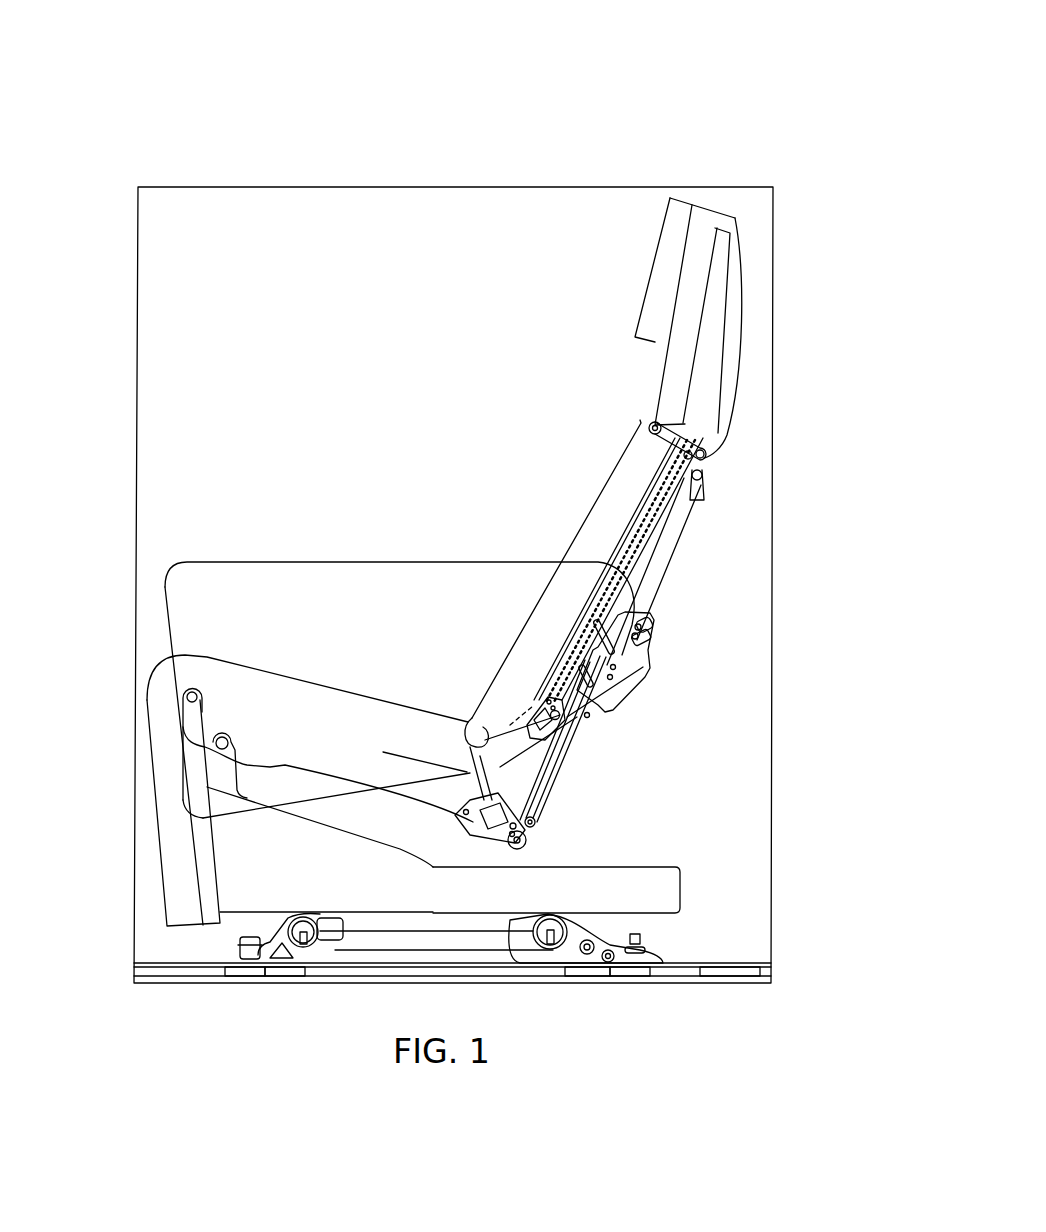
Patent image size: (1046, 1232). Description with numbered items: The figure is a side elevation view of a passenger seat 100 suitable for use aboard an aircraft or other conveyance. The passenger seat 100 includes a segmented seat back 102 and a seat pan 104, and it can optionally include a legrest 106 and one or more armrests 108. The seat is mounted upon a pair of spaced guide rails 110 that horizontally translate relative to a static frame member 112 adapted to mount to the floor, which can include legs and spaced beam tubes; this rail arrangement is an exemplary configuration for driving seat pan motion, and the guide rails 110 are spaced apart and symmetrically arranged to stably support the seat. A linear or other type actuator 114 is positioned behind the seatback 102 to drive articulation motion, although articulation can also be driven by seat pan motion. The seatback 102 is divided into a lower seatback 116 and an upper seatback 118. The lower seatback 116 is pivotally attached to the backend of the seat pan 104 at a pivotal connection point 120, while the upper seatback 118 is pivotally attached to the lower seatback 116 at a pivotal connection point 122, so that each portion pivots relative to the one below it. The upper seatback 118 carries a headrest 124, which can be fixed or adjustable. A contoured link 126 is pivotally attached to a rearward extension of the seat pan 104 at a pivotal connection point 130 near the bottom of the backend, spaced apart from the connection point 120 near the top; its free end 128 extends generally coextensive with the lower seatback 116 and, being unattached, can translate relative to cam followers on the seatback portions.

The passenger seat 100 is at (757, 90).
The segmented seat back 102 is at (708, 488).
The seat pan 104 is at (205, 652).
The legrest 106 is at (157, 823).
The armrest 108 is at (222, 560).
The guide rails 110 is at (677, 865).
The static frame member 112 is at (657, 962).
The actuator 114 is at (643, 660).
The lower seatback 116 is at (625, 497).
The upper seatback 118 is at (713, 337).
The pivotal connection point 120 is at (470, 727).
The pivotal connection point 122 is at (642, 426).
The headrest 124 is at (663, 212).
The contoured link 126 is at (697, 505).
The free end 128 is at (708, 450).
The pivotal connection point 130 is at (530, 840).